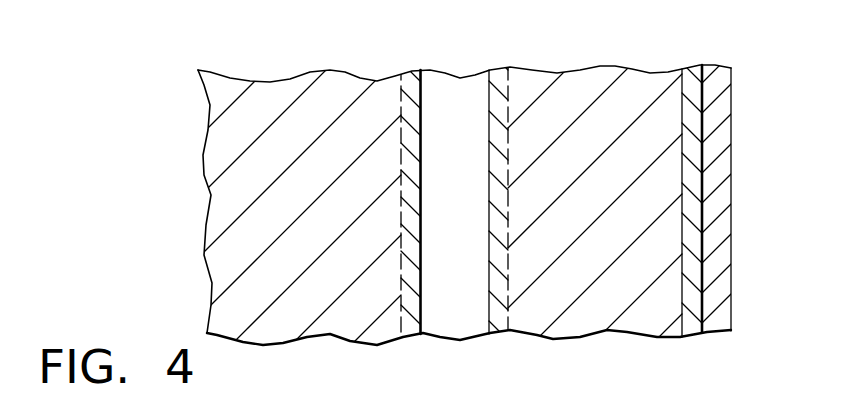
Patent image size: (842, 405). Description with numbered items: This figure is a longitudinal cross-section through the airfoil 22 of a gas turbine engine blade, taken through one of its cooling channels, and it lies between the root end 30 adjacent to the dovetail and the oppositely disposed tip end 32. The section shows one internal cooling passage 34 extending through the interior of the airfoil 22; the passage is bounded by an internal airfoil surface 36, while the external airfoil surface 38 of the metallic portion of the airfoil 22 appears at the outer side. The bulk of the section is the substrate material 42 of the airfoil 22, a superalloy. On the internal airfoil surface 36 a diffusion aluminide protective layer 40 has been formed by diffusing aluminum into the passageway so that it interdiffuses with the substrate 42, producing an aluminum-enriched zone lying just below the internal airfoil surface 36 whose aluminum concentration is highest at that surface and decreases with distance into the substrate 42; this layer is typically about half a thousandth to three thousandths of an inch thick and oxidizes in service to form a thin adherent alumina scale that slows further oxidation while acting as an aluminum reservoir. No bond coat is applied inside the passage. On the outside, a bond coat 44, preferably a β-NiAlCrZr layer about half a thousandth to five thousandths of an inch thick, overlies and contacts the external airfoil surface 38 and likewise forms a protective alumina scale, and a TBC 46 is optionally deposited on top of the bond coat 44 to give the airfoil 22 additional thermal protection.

The airfoil 22 is at (176, 108).
The root end 30 is at (335, 338).
The tip end 32 is at (252, 78).
The internal cooling passage 34 is at (452, 74).
The internal airfoil surface 36 is at (422, 141).
The external airfoil surface 38 is at (683, 138).
The diffusion aluminide protective layer 40 is at (410, 158).
The substrate material 42 is at (592, 310).
The bond coat 44 is at (692, 320).
The TBC 46 is at (718, 227).